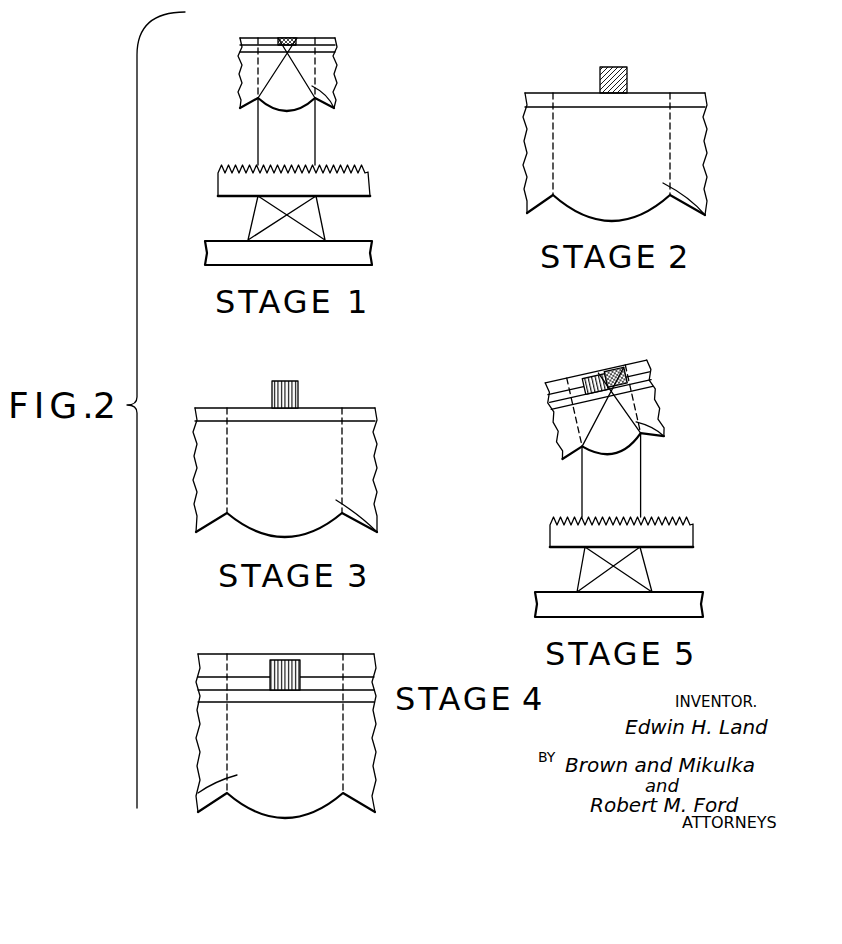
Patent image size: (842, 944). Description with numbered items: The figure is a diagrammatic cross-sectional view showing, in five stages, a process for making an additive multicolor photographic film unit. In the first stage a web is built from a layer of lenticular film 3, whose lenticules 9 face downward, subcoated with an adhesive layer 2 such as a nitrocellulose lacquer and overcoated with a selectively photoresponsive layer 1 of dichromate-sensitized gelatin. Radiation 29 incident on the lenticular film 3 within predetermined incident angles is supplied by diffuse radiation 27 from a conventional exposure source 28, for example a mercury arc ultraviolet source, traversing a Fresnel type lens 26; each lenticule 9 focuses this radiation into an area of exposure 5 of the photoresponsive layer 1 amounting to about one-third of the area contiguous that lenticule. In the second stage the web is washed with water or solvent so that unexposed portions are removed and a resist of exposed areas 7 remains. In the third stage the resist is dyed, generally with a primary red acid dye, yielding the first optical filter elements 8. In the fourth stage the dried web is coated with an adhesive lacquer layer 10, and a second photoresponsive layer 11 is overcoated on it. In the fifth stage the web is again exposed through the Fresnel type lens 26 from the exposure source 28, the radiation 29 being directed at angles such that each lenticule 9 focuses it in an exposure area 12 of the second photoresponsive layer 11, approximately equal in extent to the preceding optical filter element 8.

The photoresponsive layer 1 is at (335, 39).
The adhesive layer 2 is at (335, 49).
The lenticular film 3 is at (335, 70).
The area of exposure 5 is at (287, 38).
The exposed areas 7 is at (612, 67).
The optical filter elements 8 is at (287, 381).
The lenticules 9 is at (320, 90).
The adhesive lacquer layer 10 is at (207, 684).
The second photoresponsive layer 11 is at (366, 660).
The exposure area 12 is at (613, 370).
The Fresnel type lens 26 is at (372, 180).
The diffuse radiation 27 is at (322, 217).
The exposure source 28 is at (372, 257).
The radiation 29 is at (315, 143).